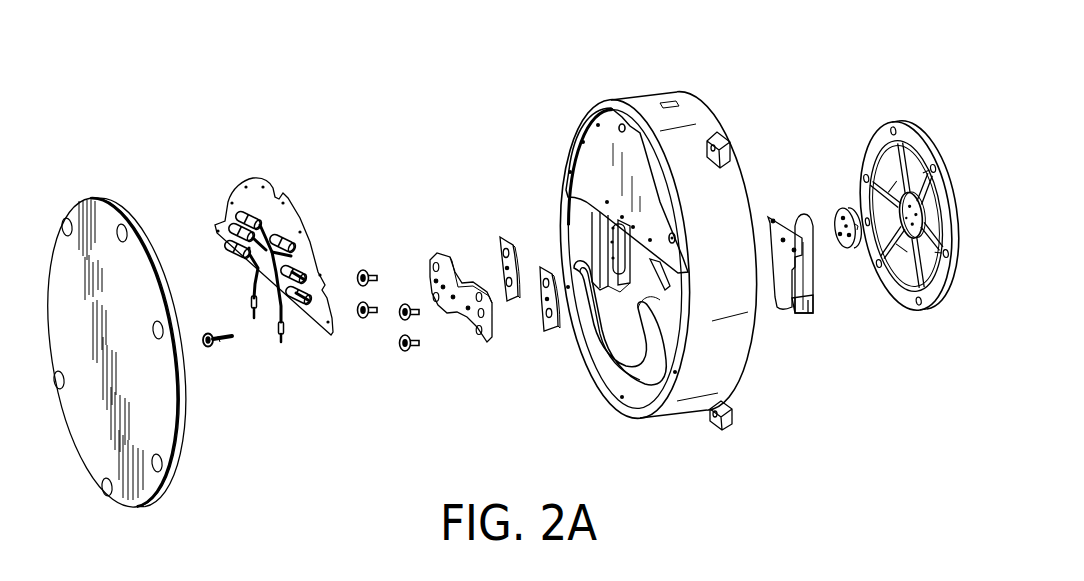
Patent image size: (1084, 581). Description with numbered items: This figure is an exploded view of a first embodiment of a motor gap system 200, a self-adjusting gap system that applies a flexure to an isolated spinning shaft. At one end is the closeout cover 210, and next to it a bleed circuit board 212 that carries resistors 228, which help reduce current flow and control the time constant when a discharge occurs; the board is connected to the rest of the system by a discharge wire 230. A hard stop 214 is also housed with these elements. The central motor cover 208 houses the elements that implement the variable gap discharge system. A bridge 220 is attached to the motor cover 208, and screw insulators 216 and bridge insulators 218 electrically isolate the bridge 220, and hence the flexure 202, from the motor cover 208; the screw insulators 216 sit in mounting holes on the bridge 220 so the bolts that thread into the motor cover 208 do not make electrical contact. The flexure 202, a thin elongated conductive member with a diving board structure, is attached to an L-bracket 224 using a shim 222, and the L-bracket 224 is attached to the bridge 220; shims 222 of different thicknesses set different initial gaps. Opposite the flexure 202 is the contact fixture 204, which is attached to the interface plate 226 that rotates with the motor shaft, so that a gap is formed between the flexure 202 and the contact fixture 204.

The motor gap system 200 is at (238, 83).
The flexure 202 is at (803, 214).
The contact fixture 204 is at (855, 250).
The motor cover 208 is at (618, 102).
The closeout cover 210 is at (90, 198).
The bleed circuit board 212 is at (240, 180).
The hard stop 214 is at (218, 348).
The screw insulators 216 is at (372, 322).
The bridge insulators 218 is at (546, 331).
The bridge 220 is at (436, 253).
The shim 222 is at (813, 312).
The L-bracket 224 is at (787, 316).
The interface plate 226 is at (898, 122).
The resistors 228 is at (276, 240).
The discharge wire 230 is at (287, 314).